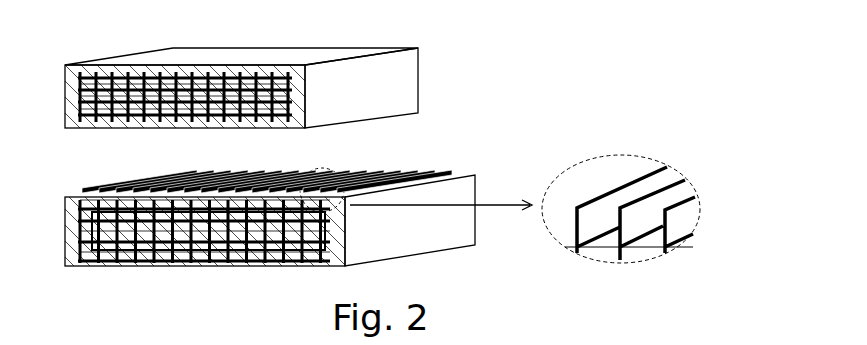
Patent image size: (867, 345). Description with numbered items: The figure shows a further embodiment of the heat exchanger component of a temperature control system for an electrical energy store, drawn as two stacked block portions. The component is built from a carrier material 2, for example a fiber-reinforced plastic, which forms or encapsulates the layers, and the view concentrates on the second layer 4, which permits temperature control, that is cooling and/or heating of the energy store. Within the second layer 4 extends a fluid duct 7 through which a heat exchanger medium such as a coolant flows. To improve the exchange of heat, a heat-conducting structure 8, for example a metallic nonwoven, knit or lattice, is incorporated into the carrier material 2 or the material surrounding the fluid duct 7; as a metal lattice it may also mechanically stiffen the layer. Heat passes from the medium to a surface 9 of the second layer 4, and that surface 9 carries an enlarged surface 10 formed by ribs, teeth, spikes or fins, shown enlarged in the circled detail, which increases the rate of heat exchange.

The carrier material 2 is at (403, 69).
The second layer 4 is at (133, 41).
The fluid duct 7 is at (265, 87).
The heat-conducting structure 8 is at (309, 57).
The surface 9 is at (455, 168).
The enlarged surface 10 is at (377, 172).